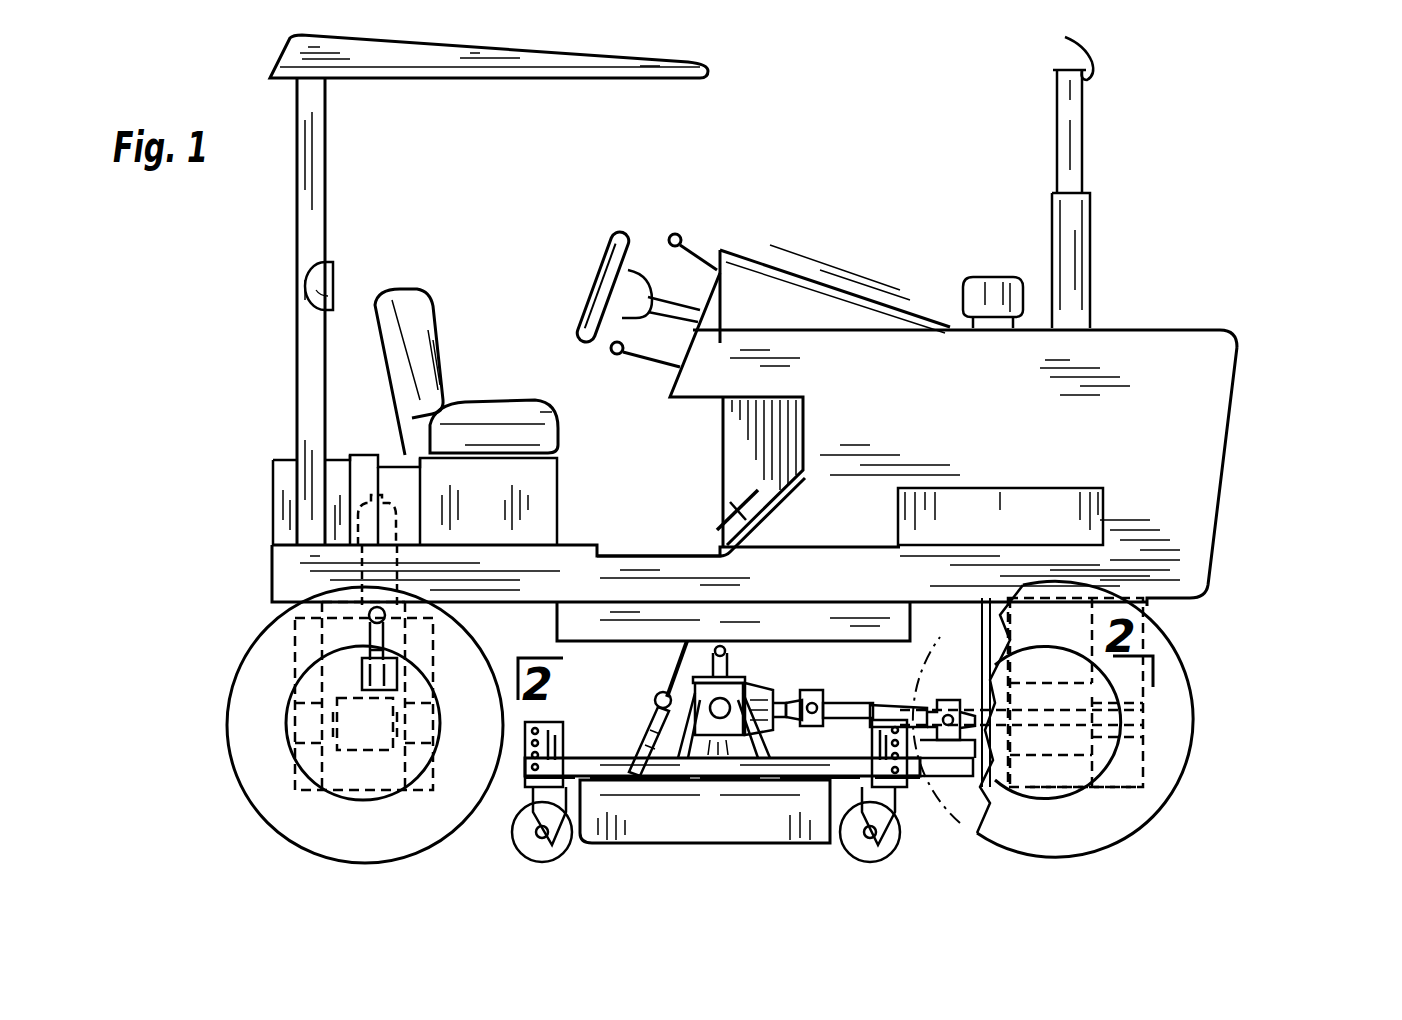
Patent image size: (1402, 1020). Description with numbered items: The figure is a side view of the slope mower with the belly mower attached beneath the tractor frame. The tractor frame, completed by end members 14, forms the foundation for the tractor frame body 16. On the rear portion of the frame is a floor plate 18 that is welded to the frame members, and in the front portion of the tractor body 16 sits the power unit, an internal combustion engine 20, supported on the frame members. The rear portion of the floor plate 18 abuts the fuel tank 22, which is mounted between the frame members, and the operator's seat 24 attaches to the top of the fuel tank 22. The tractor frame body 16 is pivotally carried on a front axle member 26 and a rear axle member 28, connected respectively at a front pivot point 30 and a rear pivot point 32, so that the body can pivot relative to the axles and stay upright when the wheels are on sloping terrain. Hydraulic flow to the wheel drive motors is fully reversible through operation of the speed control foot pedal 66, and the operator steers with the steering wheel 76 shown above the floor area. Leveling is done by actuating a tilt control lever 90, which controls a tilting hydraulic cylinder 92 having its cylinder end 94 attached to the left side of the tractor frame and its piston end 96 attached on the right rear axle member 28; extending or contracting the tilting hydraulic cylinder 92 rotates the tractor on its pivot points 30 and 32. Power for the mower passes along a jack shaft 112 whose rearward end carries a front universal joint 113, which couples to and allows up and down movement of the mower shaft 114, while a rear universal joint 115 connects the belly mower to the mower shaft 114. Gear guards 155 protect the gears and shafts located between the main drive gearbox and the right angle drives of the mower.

The end member 14 is at (295, 632).
The tractor frame body 16 is at (1145, 467).
The floor plate 18 is at (628, 548).
The internal combustion engine 20 is at (1075, 425).
The fuel tank 22 is at (563, 480).
The operator's seat 24 is at (495, 402).
The front axle member 26 is at (1047, 757).
The rear axle member 28 is at (372, 752).
The front pivot point 30 is at (1143, 722).
The rear pivot point 32 is at (297, 727).
The speed control foot pedal 66 is at (732, 510).
The steering wheel 76 is at (607, 273).
The tilt control lever 90 is at (638, 365).
The tilting hydraulic cylinder 92 is at (410, 545).
The cylinder end 94 is at (372, 500).
The piston end 96 is at (433, 668).
The jack shaft 112 is at (983, 757).
The front universal joint 113 is at (947, 703).
The mower shaft 114 is at (890, 705).
The rear universal joint 115 is at (810, 692).
The gear guard 155 is at (680, 722).